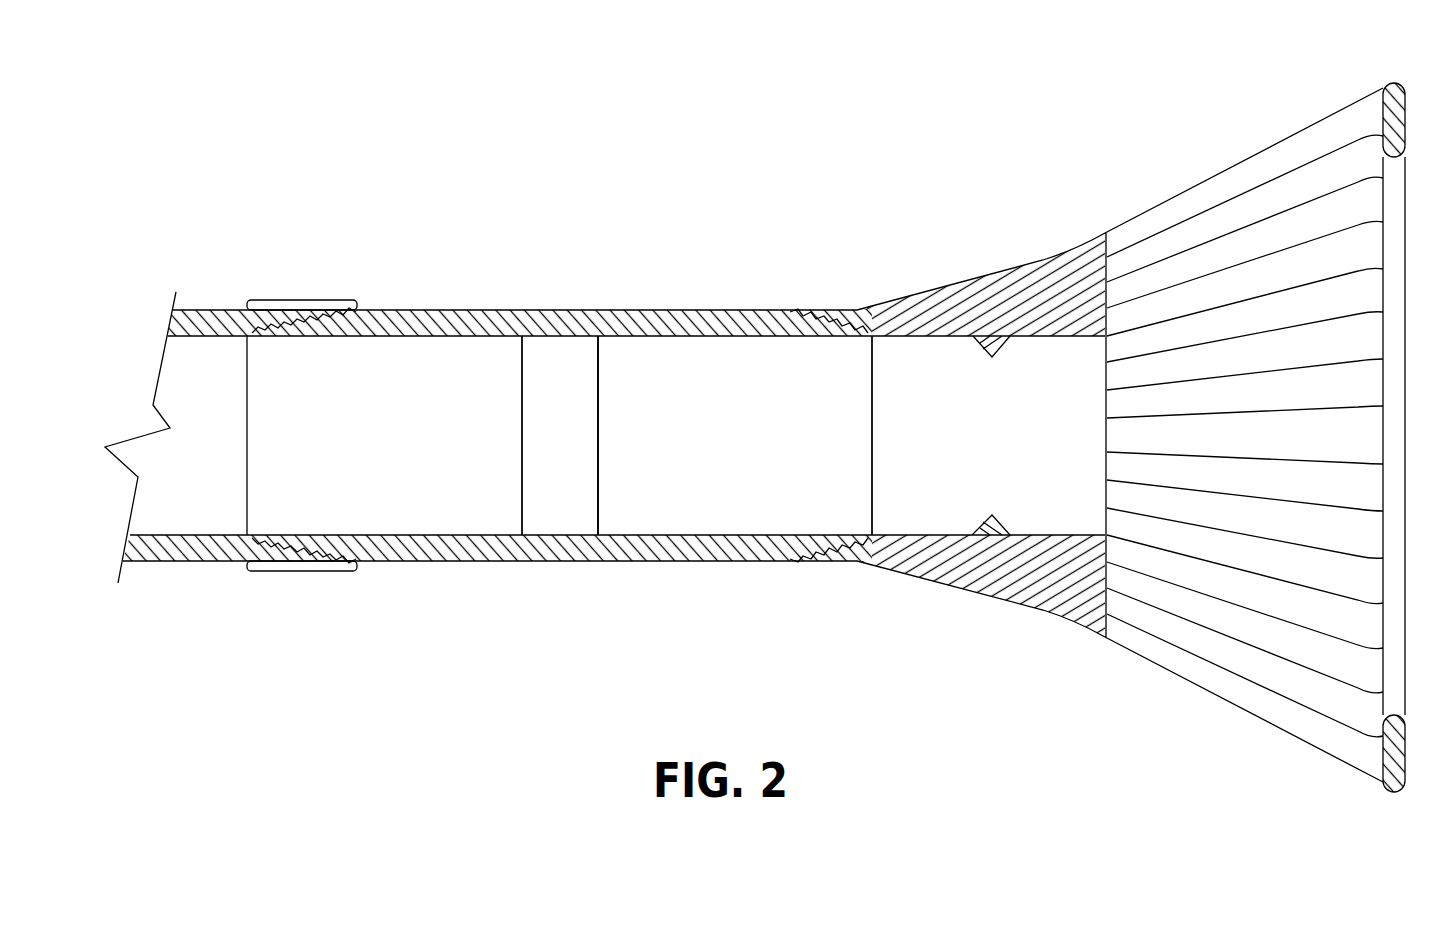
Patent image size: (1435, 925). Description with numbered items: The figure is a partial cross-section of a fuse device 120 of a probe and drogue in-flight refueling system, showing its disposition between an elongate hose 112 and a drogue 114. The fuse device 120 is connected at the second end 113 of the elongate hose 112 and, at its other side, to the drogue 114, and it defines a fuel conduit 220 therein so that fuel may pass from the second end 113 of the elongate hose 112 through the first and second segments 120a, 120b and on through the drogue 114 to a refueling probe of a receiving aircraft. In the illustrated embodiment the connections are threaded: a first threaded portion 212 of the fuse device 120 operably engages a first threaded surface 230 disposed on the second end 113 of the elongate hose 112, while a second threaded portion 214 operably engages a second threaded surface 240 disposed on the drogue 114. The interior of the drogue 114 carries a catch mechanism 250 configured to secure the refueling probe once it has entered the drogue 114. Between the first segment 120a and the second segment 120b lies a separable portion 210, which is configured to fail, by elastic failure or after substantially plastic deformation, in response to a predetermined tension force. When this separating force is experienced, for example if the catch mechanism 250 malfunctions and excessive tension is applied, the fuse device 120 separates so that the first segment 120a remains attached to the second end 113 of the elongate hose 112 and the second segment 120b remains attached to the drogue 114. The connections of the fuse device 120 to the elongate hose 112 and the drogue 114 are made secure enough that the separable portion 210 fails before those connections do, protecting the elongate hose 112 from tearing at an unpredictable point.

The elongate hose 112 is at (195, 343).
The second end of the elongate hose 113 is at (228, 342).
The drogue 114 is at (1290, 145).
The fuse device 120 is at (873, 292).
The first segment 120a is at (522, 580).
The second segment 120b is at (873, 580).
The separable portion 210 is at (537, 515).
The first threaded portion 212 is at (299, 490).
The second threaded portion 214 is at (851, 487).
The fuel conduit 220 is at (647, 419).
The first threaded surface 230 is at (280, 547).
The second threaded surface 240 is at (825, 552).
The catch mechanism 250 is at (1000, 358).